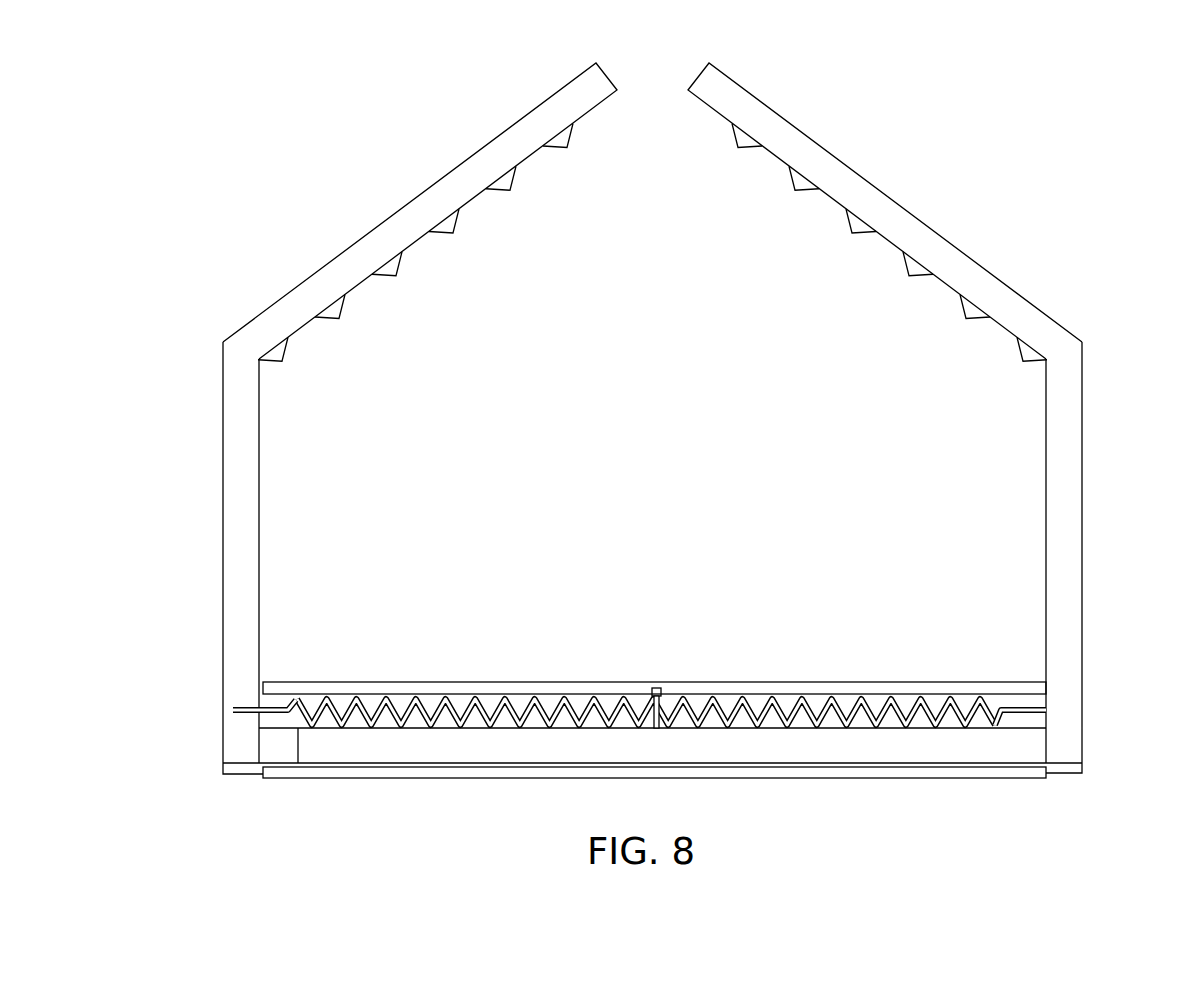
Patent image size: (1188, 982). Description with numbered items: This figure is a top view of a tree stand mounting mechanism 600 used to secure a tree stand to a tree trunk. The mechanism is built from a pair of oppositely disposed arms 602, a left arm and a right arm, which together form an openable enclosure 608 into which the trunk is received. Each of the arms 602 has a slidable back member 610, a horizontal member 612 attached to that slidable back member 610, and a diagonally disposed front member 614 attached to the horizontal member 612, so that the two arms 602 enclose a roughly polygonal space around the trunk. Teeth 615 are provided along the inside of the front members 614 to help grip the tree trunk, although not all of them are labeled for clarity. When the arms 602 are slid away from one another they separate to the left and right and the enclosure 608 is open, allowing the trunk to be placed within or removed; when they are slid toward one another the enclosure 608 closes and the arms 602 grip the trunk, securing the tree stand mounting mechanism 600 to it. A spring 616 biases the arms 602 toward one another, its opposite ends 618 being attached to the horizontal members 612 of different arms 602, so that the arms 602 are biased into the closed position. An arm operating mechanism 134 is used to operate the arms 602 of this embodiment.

The tree stand mounting mechanism 600 is at (1027, 115).
The pair of oppositely disposed arms 602 is at (223, 457).
The openable enclosure 608 is at (538, 370).
The slidable back member 610 is at (873, 682).
The horizontal member 612 is at (233, 550).
The diagonally disposed front member 614 is at (414, 199).
The teeth 615 is at (447, 229).
The spring 616 is at (550, 697).
The opposite ends of the spring 618 is at (255, 709).
The arm operating mechanism 134 is at (733, 697).